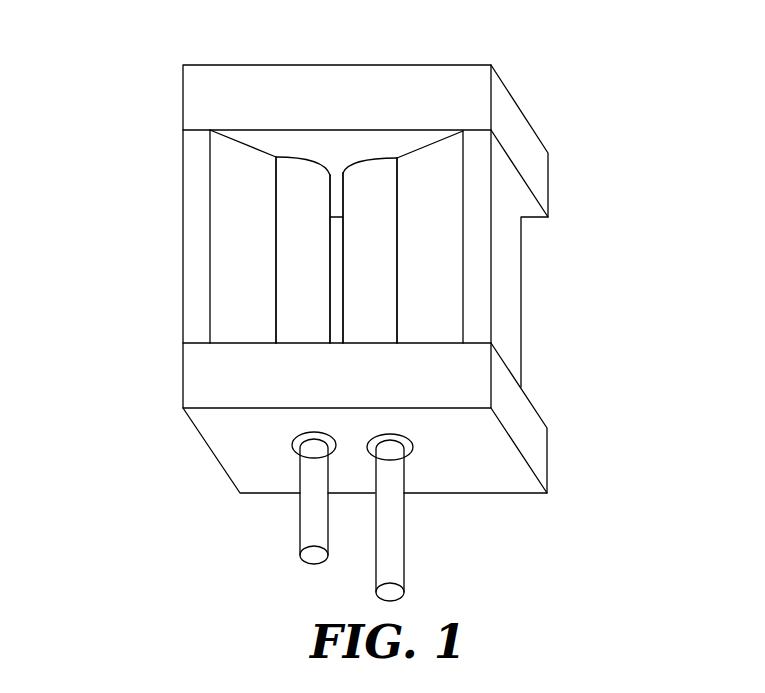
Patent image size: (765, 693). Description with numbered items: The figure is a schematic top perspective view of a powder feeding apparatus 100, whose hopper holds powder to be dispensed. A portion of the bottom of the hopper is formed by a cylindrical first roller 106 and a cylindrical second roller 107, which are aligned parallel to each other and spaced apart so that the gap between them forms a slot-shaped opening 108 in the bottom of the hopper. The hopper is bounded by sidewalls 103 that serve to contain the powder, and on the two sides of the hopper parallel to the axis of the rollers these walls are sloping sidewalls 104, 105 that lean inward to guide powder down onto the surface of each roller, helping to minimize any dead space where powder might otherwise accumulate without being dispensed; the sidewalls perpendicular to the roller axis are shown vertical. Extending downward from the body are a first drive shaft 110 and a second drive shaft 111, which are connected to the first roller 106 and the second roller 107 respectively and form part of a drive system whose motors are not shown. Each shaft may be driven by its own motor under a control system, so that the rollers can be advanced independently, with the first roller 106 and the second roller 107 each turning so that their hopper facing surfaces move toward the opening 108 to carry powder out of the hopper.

The powder feeding apparatus 100 is at (155, 67).
The sidewalls 103 is at (393, 140).
The sloping sidewall 104 is at (230, 183).
The sloping sidewall 105 is at (442, 255).
The first roller 106 is at (300, 313).
The second roller 107 is at (370, 318).
The opening 108 is at (337, 258).
The first drive shaft 110 is at (317, 523).
The second drive shaft 111 is at (392, 535).